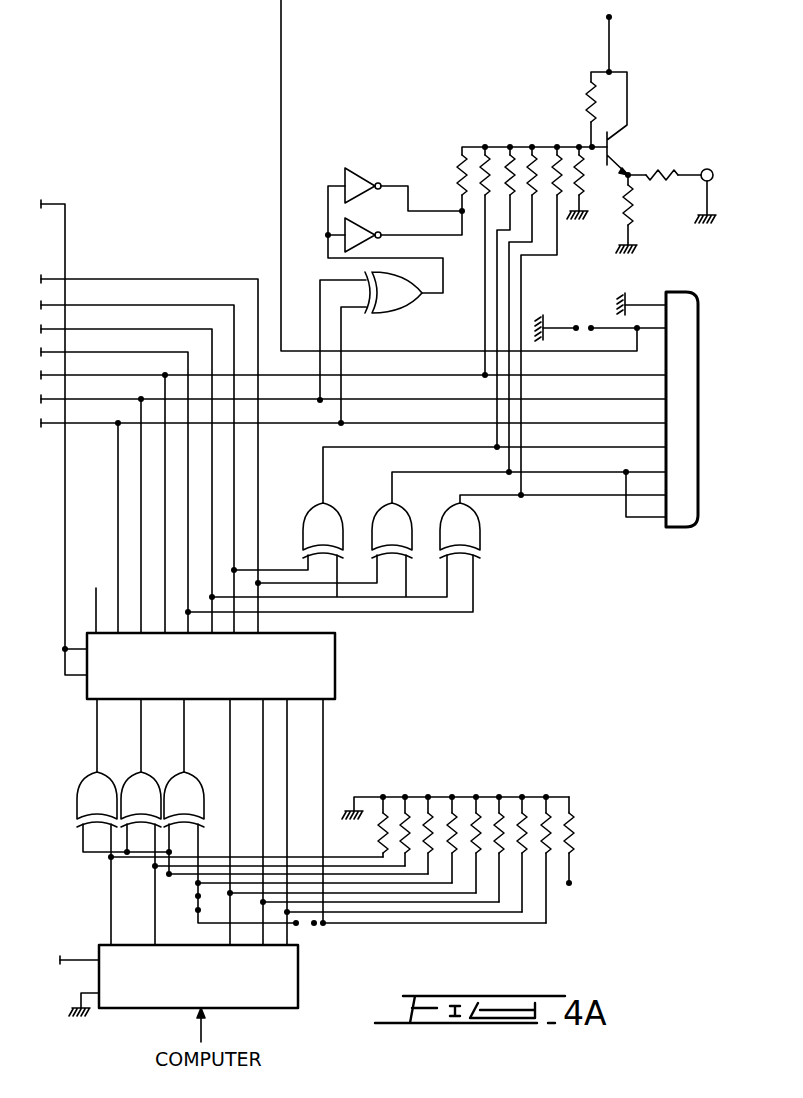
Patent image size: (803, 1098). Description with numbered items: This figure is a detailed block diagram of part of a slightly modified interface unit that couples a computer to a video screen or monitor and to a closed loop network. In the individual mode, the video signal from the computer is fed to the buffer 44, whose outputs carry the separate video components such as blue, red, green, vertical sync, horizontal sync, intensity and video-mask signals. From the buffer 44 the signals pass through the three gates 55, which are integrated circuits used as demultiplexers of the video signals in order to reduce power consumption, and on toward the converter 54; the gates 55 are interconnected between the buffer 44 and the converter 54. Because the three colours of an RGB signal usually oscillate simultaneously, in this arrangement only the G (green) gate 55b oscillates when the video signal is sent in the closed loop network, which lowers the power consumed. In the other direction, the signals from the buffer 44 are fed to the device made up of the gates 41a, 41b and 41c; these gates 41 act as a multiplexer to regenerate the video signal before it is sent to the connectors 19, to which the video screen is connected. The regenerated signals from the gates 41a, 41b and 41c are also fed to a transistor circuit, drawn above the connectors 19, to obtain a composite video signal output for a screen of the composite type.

The connectors 19 is at (677, 530).
The gates 41 is at (431, 538).
The gate 41a is at (478, 528).
The gate 41b is at (389, 520).
The gate 41c is at (327, 518).
The buffer 44 is at (322, 662).
The converter 54 is at (290, 975).
The gates 55 is at (129, 771).
The G (green) gate 55b is at (137, 795).